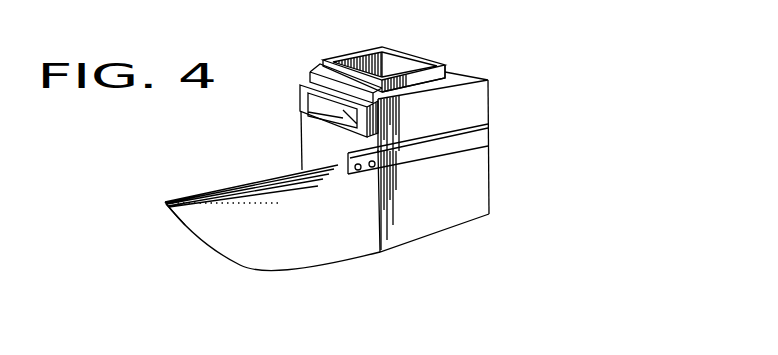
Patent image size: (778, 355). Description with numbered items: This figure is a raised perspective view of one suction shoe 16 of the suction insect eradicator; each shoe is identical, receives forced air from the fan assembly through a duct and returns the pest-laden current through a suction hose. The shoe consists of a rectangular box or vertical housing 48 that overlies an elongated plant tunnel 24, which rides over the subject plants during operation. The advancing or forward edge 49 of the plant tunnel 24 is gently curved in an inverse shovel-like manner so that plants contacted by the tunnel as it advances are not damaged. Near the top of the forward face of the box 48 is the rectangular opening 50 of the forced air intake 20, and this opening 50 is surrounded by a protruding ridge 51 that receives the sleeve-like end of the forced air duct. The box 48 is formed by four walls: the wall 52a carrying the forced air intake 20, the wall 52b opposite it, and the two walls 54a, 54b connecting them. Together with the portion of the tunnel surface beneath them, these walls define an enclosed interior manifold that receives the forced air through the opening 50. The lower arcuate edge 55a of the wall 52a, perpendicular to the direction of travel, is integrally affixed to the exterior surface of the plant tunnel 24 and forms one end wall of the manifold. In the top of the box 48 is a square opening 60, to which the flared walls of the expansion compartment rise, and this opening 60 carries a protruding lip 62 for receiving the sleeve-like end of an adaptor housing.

The suction shoe 16 is at (509, 152).
The forced air intake 20 is at (302, 100).
The plant tunnel 24 is at (230, 240).
The vertical housing 48 is at (483, 106).
The forward edge 49 is at (165, 202).
The rectangular opening 50 is at (330, 114).
The protruding ridge 51 is at (312, 87).
The wall 52a is at (350, 163).
The wall 52b is at (487, 80).
The wall 54a is at (476, 192).
The wall 54b is at (342, 57).
The lower arcuate edge 55a is at (372, 202).
The square opening 60 is at (389, 65).
The protruding lip 62 is at (437, 81).